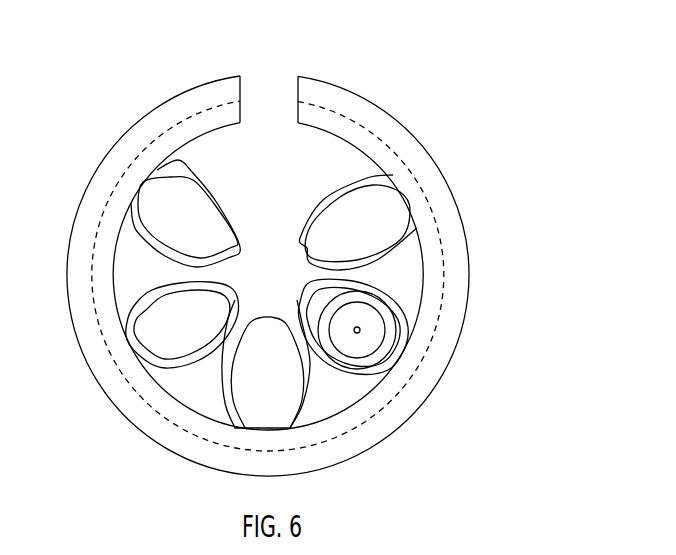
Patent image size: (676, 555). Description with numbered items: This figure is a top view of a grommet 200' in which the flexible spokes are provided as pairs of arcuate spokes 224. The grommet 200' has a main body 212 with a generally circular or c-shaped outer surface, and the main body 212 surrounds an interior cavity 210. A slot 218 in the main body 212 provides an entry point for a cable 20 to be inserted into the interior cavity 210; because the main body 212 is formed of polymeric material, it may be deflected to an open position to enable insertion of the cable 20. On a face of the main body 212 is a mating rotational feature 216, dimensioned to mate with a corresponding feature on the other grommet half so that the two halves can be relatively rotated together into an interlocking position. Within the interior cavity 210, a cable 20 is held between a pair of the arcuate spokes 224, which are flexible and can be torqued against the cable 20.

The grommet 200' is at (536, 28).
The interior cavity 210 is at (210, 162).
The main body 212 is at (453, 328).
The mating rotational feature 216 is at (428, 196).
The slot 218 is at (270, 92).
The arcuate spokes 224 is at (137, 302).
The cable 20 is at (367, 368).